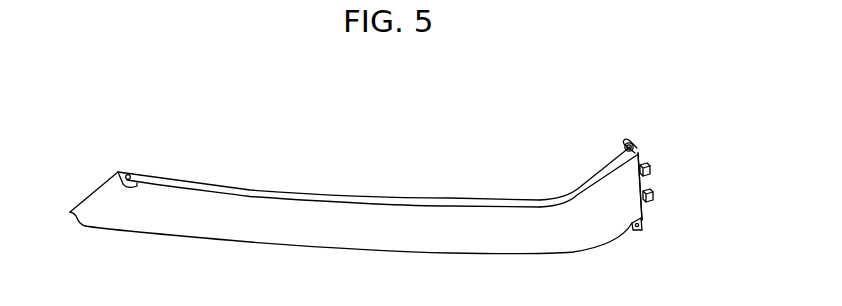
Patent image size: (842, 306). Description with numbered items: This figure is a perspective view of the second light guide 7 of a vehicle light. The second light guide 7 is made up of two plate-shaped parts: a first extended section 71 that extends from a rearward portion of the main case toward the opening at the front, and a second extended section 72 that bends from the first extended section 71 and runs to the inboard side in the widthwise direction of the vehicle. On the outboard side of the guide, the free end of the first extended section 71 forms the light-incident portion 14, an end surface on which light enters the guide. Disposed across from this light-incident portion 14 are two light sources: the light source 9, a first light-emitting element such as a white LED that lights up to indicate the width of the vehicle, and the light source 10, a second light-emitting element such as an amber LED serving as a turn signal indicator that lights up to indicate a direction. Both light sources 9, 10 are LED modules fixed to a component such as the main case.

The second light guide 7 is at (356, 165).
The first extended section 71 is at (588, 162).
The second extended section 72 is at (395, 223).
The light source 9 is at (643, 167).
The light-incident portion 14 is at (642, 180).
The light source 10 is at (652, 197).